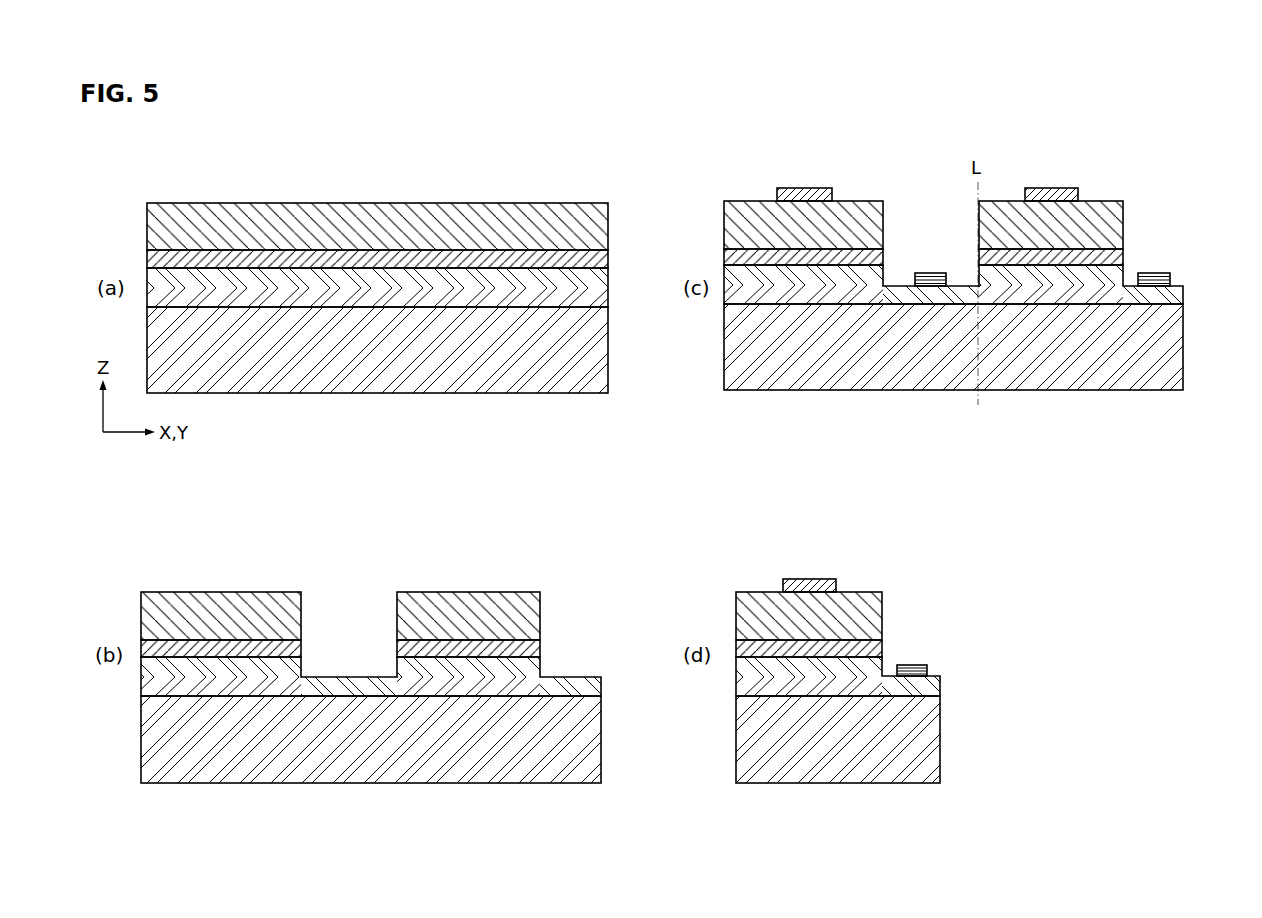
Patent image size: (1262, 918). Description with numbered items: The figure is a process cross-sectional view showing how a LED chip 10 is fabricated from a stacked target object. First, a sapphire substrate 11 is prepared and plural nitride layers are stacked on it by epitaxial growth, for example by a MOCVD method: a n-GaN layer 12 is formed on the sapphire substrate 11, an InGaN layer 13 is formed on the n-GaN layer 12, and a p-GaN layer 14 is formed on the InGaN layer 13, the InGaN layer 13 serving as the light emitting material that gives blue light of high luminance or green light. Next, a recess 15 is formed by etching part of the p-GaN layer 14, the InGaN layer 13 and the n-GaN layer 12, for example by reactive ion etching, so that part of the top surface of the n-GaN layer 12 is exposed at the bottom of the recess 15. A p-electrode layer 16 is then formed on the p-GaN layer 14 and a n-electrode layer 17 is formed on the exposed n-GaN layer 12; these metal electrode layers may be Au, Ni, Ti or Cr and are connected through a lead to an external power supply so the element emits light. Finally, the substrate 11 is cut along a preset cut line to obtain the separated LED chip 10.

The LED chip 10 is at (591, 166).
The sapphire substrate 11 is at (608, 349).
The n-GaN layer 12 is at (608, 284).
The InGaN layer 13 is at (608, 257).
The p-GaN layer 14 is at (608, 228).
The recess 15 is at (349, 625).
The p-electrode layer 16 is at (806, 187).
The n-electrode layer 17 is at (932, 272).